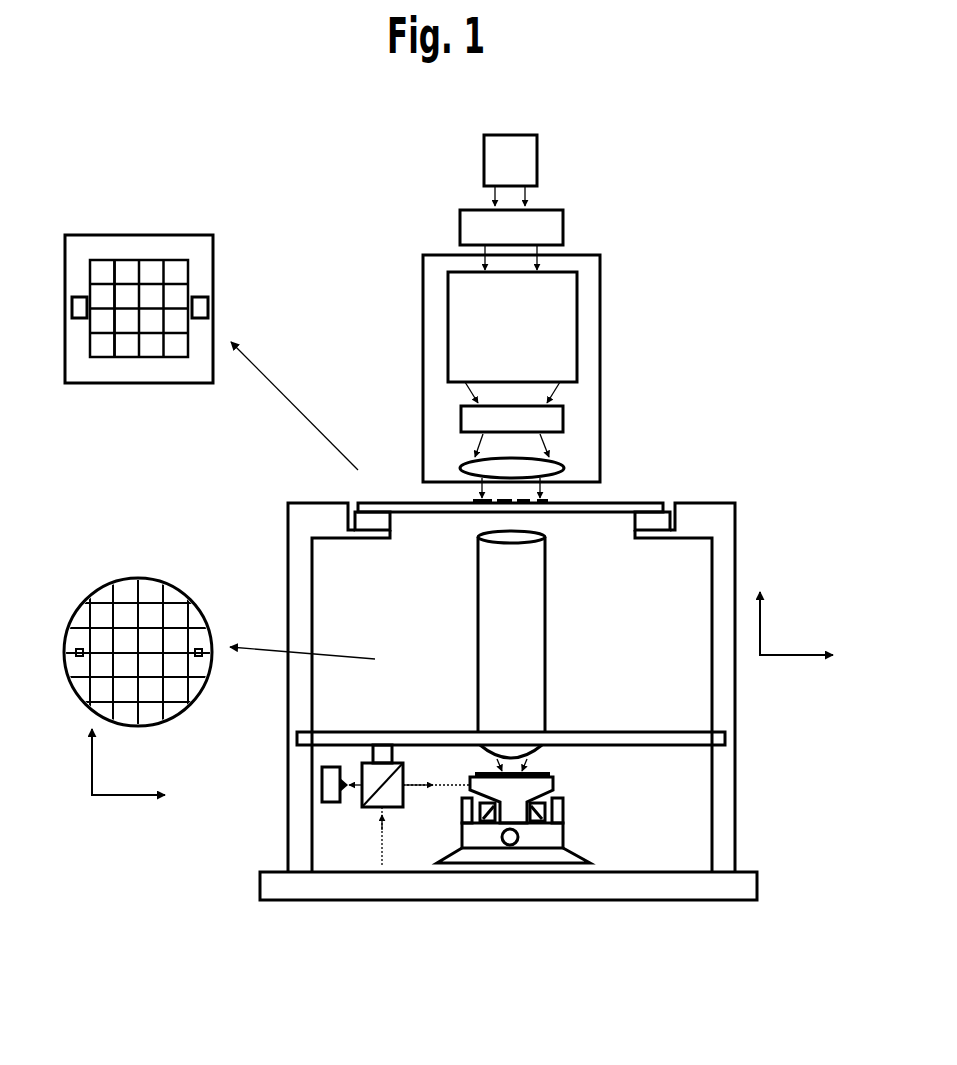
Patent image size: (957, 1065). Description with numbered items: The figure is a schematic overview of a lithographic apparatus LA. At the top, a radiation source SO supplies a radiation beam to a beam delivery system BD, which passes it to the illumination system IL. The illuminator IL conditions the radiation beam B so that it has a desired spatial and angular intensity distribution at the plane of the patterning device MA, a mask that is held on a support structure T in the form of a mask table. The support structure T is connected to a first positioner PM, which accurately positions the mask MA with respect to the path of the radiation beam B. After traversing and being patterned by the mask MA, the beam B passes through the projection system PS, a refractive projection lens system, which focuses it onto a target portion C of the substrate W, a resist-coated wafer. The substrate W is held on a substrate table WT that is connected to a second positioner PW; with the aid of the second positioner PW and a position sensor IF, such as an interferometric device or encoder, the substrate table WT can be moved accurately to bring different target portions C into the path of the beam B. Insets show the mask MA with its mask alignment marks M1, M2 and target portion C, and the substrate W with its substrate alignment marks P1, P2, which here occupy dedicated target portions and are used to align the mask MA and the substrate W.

The radiation source SO is at (537, 165).
The beam delivery system BD is at (563, 230).
The illumination system IL is at (600, 294).
The lithographic apparatus LA is at (753, 405).
The patterning device MA is at (482, 501).
The mask alignment mark M1 is at (201, 297).
The mask alignment mark M2 is at (80, 297).
The target portion C is at (130, 323).
The support structure T is at (643, 503).
The radiation beam B is at (513, 492).
The first positioner PM is at (678, 528).
The projection system PS is at (545, 627).
The substrate W is at (473, 776).
The substrate alignment mark P1 is at (80, 648).
The substrate alignment mark P2 is at (200, 648).
The substrate table WT is at (555, 784).
The second positioner PW is at (563, 838).
The position sensor IF is at (352, 812).